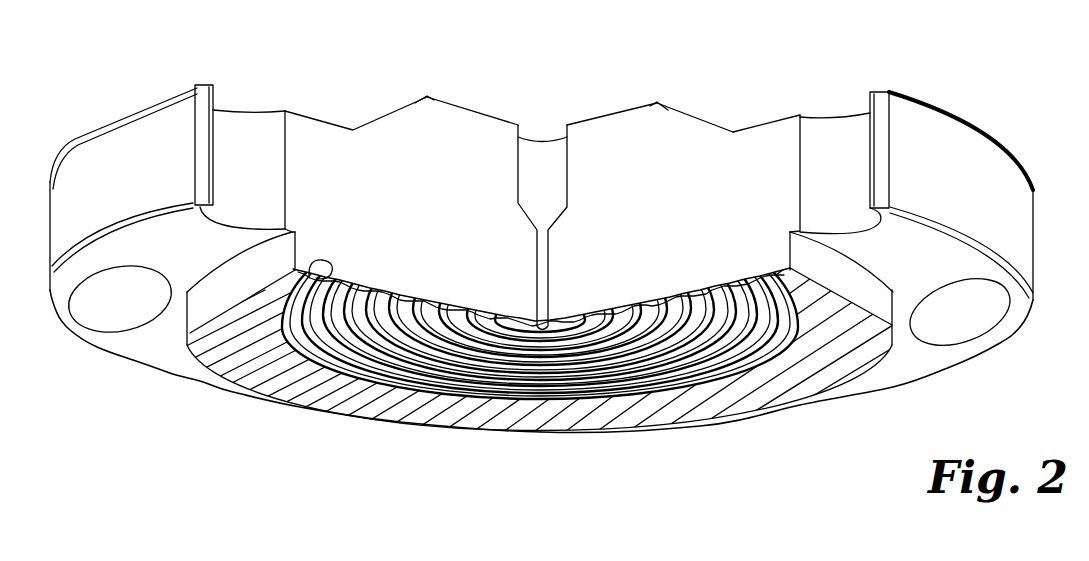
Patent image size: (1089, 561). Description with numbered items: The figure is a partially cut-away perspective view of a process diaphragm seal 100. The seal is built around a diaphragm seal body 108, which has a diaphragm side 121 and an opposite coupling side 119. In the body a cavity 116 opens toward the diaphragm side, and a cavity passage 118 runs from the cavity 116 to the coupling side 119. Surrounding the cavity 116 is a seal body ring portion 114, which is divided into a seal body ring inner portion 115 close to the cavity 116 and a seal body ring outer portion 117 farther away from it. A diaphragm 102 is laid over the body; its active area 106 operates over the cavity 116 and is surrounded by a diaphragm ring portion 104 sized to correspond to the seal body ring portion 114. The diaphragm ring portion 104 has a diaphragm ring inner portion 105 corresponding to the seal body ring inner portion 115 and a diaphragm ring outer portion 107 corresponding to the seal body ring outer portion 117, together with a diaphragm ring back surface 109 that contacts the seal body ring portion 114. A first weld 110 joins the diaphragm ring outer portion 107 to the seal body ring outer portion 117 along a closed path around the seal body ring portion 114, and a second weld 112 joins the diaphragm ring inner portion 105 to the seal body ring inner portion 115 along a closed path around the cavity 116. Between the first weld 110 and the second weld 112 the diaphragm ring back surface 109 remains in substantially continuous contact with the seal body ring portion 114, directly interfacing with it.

The process diaphragm seal 100 is at (855, 24).
The diaphragm 102 is at (710, 374).
The diaphragm ring portion 104 is at (415, 419).
The diaphragm ring inner portion 105 is at (363, 276).
The active area 106 is at (353, 348).
The diaphragm ring outer portion 107 is at (307, 256).
The diaphragm seal body 108 is at (988, 131).
The diaphragm ring back surface 109 is at (285, 314).
The first weld 110 is at (859, 386).
The second weld 112 is at (373, 276).
The seal body ring portion 114 is at (747, 286).
The seal body ring inner portion 115 is at (717, 282).
The cavity 116 is at (640, 292).
The seal body ring outer portion 117 is at (788, 256).
The cavity passage 118 is at (543, 157).
The coupling side 119 is at (480, 110).
The diaphragm side 121 is at (170, 356).